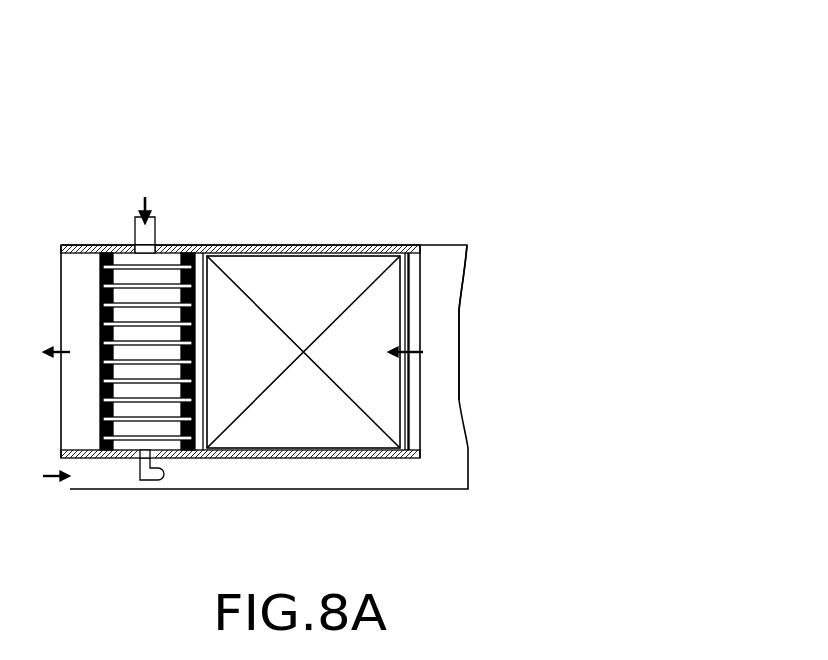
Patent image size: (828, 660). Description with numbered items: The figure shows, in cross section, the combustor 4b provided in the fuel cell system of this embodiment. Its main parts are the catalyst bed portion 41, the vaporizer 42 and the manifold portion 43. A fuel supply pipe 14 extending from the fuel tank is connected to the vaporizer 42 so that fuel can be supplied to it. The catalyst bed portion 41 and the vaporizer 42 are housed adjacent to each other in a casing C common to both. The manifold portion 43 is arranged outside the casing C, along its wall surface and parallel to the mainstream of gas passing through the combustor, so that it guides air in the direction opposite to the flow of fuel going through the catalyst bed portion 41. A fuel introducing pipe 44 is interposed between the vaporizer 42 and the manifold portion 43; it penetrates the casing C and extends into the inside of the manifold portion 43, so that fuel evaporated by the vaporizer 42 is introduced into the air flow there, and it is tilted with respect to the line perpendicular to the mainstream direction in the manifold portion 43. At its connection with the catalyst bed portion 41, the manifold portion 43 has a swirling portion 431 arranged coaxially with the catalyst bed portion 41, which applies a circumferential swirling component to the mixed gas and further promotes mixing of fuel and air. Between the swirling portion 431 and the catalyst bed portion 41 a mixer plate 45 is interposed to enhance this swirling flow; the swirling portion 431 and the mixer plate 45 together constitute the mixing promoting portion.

The combustor 4b is at (343, 100).
The fuel supply pipe 14 is at (135, 230).
The vaporizer 42 is at (190, 245).
The casing C is at (287, 245).
The catalyst bed portion 41 is at (345, 245).
The mixer plate 45 is at (415, 245).
The swirling portion 431 is at (465, 245).
The manifold portion 43 is at (88, 490).
The fuel introducing pipe 44 is at (147, 482).